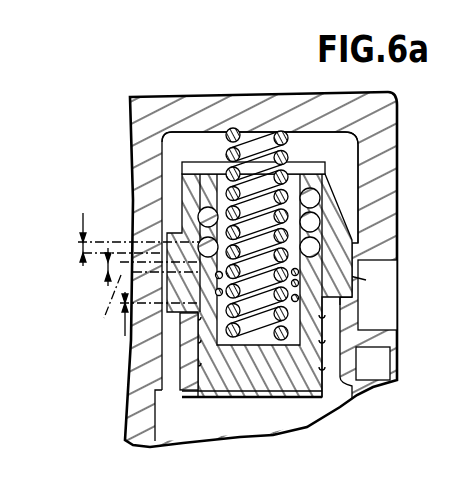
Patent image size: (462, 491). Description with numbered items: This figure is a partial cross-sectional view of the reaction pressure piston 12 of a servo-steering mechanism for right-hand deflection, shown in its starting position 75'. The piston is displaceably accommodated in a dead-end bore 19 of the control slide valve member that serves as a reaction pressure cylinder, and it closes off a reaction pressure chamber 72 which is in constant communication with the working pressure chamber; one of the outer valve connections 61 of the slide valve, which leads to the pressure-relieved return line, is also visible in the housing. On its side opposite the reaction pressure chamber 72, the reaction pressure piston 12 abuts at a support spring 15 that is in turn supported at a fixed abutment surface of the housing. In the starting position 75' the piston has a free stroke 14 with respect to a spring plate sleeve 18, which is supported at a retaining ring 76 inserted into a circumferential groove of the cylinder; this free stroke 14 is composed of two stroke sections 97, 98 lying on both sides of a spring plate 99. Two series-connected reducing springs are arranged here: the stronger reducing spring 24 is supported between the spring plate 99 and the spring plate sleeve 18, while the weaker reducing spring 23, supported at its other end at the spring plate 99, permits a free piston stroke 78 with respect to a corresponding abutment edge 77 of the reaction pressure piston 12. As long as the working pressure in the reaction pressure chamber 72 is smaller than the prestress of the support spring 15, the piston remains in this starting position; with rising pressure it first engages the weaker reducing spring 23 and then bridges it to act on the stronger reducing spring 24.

The reaction pressure piston 12 is at (254, 403).
The free piston stroke 14 is at (103, 230).
The support spring 15 is at (297, 145).
The spring plate sleeve 18 is at (321, 220).
The dead-end bore 19 is at (356, 362).
The weaker reducing spring 23 is at (342, 285).
The stronger reducing spring 24 is at (343, 200).
The valve connection 61 is at (394, 334).
The reaction pressure chamber 72 is at (331, 406).
The starting position 75' is at (143, 305).
The retaining ring 76 is at (325, 168).
The abutment edge 77 is at (353, 300).
The free piston stroke 78 is at (127, 318).
The stroke section 97 is at (108, 278).
The stroke section 98 is at (83, 241).
The spring plate 99 is at (321, 247).